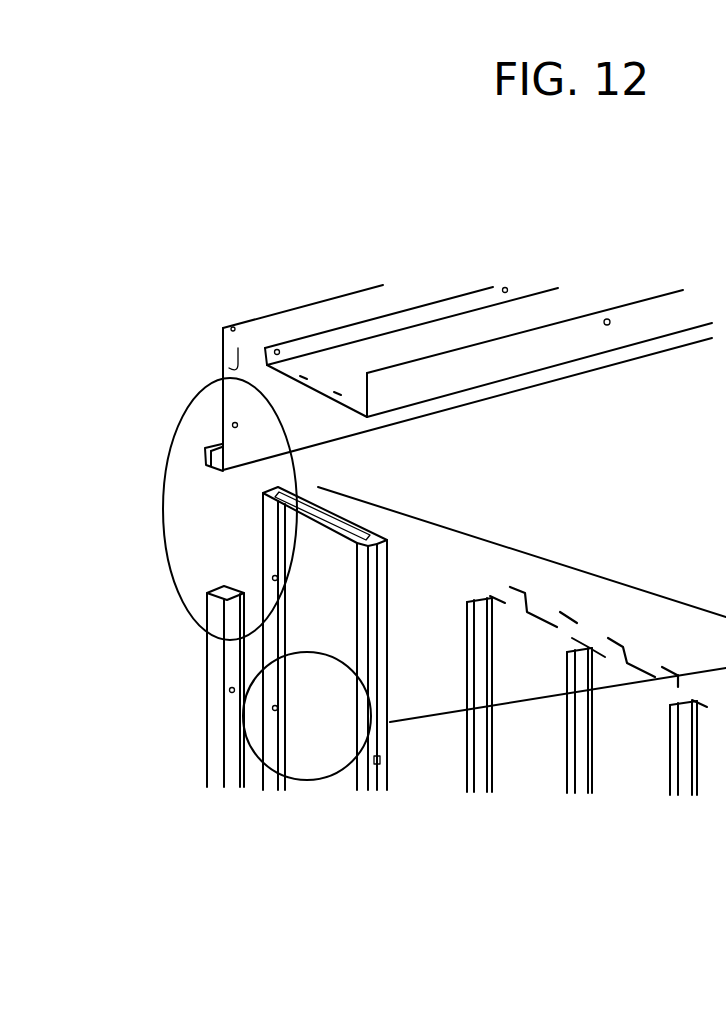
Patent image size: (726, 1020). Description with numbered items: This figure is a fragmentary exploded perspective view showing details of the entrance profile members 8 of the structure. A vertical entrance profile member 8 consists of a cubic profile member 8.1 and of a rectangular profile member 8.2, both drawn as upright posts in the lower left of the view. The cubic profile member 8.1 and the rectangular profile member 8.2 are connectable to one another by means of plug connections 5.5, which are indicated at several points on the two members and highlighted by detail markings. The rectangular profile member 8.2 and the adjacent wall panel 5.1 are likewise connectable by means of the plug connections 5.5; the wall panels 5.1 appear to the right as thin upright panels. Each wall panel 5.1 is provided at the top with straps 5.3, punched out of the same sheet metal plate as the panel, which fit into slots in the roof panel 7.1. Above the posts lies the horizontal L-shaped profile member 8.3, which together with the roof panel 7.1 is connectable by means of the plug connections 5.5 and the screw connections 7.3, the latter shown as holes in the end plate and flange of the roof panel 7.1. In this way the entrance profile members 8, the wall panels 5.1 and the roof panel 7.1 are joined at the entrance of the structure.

The roof panel 7.1 is at (450, 333).
The screw connections 7.3 is at (278, 350).
The horizontal L-shaped profile member 8.3 is at (223, 362).
The entrance profile member 8 is at (166, 622).
The cubic profile member 8.1 is at (215, 673).
The rectangular profile member 8.2 is at (330, 785).
The plug connections 5.5 is at (273, 578).
The straps 5.3 is at (563, 620).
The wall panel 5.1 is at (537, 742).